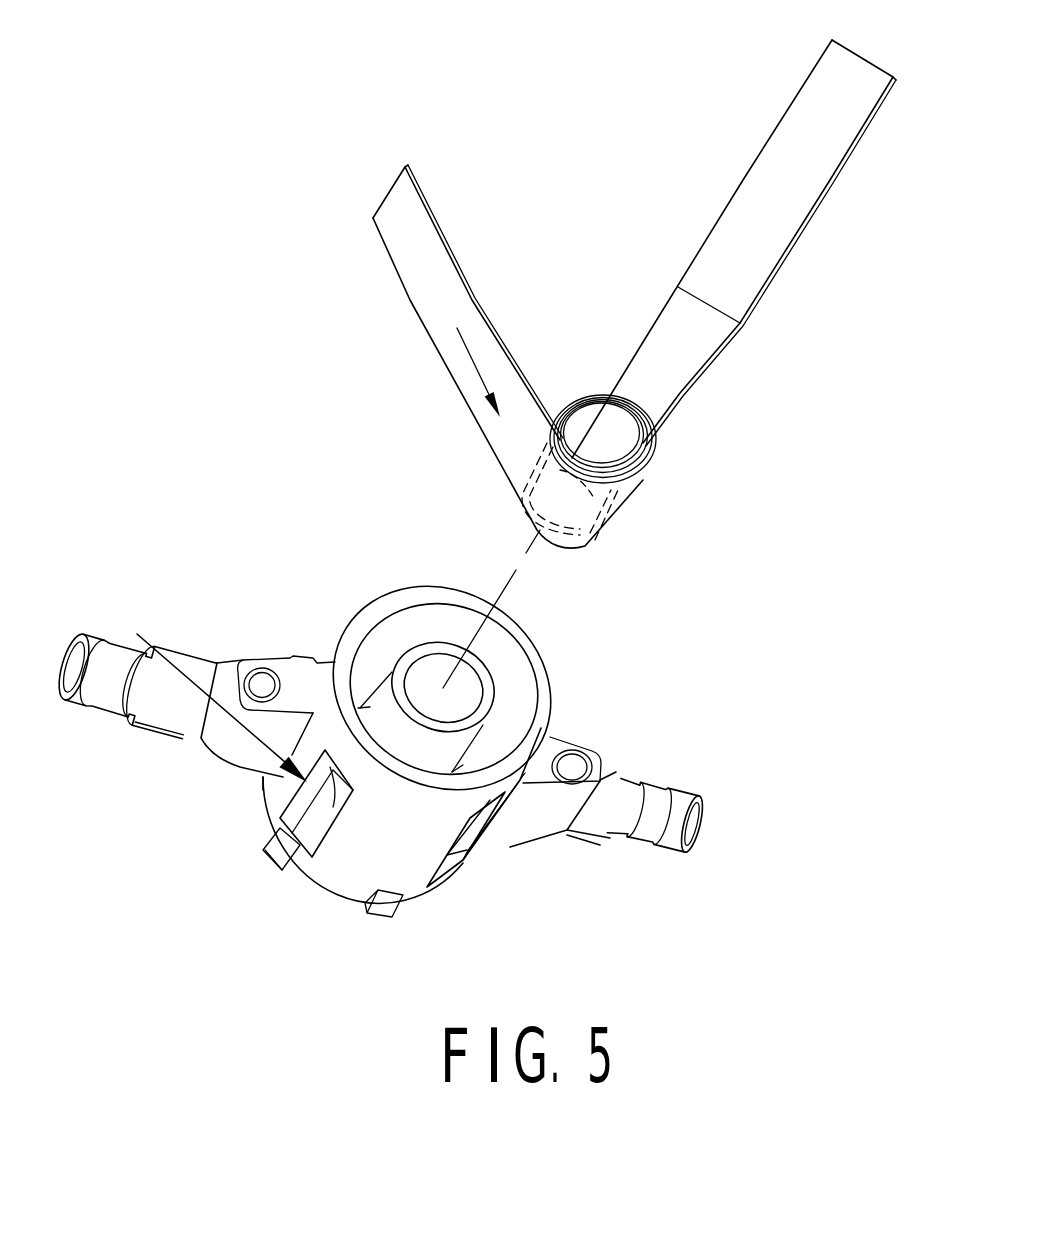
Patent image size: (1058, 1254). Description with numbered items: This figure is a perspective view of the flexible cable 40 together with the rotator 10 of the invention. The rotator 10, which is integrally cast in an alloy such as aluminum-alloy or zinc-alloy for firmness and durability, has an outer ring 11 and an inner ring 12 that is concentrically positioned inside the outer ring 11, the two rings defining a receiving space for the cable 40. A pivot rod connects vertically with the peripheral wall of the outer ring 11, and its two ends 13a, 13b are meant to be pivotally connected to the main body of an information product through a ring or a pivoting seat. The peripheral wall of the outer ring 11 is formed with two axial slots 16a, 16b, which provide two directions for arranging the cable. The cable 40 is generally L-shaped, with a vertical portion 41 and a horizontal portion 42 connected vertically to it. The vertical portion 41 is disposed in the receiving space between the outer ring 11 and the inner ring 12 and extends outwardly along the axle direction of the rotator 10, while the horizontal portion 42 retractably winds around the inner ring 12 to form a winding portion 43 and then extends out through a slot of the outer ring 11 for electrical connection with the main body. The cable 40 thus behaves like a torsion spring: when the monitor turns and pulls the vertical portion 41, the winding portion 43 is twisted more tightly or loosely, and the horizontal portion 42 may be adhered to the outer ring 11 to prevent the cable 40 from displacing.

The rotator 10 is at (405, 535).
The outer ring 11 is at (540, 672).
The inner ring 12 is at (442, 642).
The end of pivot rod 13a is at (93, 700).
The end of pivot rod 13b is at (702, 830).
The axial slot 16a is at (308, 870).
The axial slot 16b is at (473, 857).
The cable 40 is at (790, 350).
The vertical portion 41 is at (792, 210).
The horizontal portion 42 is at (448, 297).
The winding portion 43 is at (660, 458).